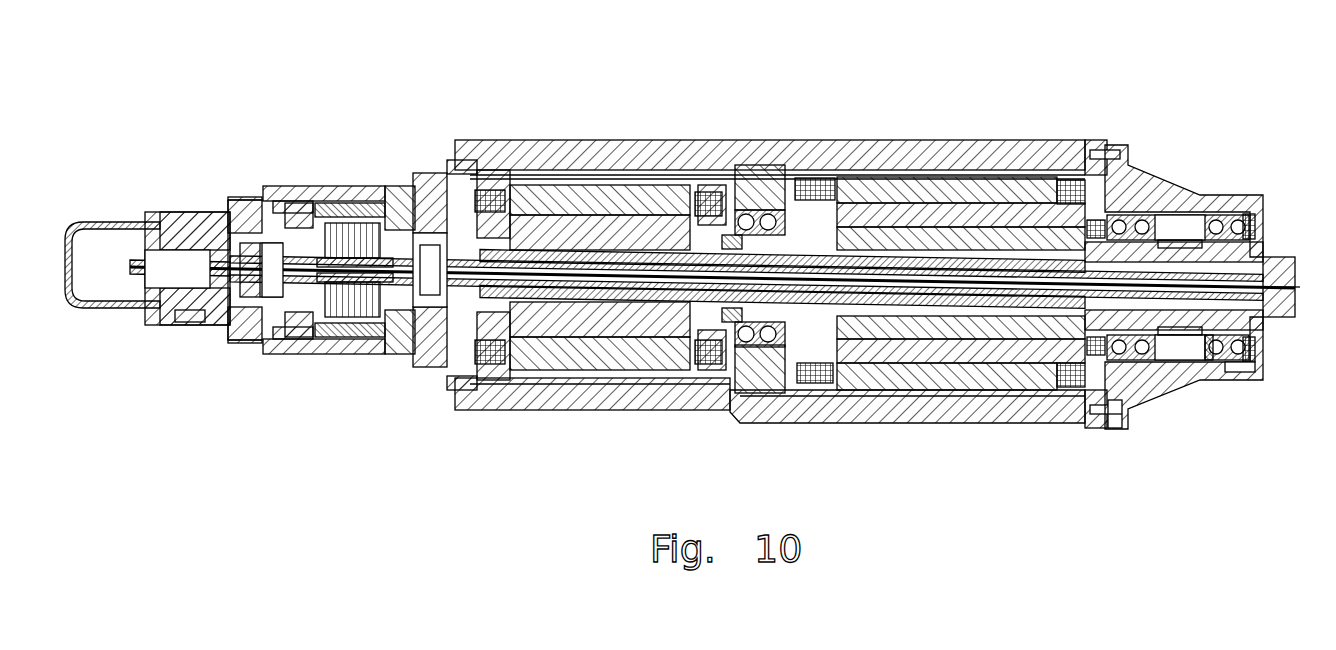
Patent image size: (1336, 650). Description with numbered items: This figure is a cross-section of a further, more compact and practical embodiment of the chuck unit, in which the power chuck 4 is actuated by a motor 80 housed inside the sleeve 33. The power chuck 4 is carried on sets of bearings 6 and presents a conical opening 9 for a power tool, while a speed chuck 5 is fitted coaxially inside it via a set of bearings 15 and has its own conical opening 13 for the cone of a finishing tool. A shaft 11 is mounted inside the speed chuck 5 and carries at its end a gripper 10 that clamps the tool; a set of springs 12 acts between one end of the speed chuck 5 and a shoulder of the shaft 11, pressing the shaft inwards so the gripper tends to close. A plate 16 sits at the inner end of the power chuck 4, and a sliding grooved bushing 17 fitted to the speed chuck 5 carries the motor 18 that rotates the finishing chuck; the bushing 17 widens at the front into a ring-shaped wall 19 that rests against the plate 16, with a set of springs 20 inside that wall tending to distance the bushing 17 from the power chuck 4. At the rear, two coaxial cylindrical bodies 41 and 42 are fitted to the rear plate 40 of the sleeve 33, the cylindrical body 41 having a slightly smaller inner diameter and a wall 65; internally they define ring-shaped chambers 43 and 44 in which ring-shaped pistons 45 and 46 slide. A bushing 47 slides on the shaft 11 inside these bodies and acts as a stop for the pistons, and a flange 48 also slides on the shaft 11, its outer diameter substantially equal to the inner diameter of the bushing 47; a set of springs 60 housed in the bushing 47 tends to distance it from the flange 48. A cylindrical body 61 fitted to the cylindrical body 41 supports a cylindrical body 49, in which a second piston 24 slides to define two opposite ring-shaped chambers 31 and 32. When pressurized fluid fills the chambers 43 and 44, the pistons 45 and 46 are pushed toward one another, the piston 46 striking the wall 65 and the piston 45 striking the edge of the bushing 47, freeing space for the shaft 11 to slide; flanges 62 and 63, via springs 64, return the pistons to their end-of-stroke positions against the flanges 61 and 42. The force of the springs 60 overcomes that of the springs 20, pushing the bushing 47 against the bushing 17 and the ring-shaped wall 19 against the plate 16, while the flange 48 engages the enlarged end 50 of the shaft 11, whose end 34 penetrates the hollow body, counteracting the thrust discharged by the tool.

The power chuck 4 is at (1198, 365).
The speed chuck 5 is at (1175, 362).
The bearings 6 is at (1132, 215).
The conical opening 9 is at (1267, 260).
The gripper 10 is at (1243, 205).
The shaft 11 is at (1003, 300).
The set of springs 12 is at (1113, 400).
The conical opening 13 is at (1265, 372).
The bearings 15 is at (1053, 350).
The plate 16 is at (772, 178).
The sliding grooved bushing 17 is at (740, 222).
The motor 18 is at (570, 190).
The ring-shaped wall 19 is at (746, 200).
The set of springs 20 is at (713, 195).
The second piston 24 is at (155, 240).
The ring-shaped chamber 31 is at (210, 210).
The ring-shaped chamber 32 is at (180, 322).
The sleeve 33 is at (1082, 160).
The end of shaft 34 is at (1177, 198).
The rear plate 40 is at (465, 162).
The cylindrical body 41 is at (342, 187).
The cylindrical body 42 is at (432, 173).
The ring-shaped chamber 43 is at (275, 350).
The ring-shaped chamber 44 is at (412, 362).
The ring-shaped piston 45 is at (298, 187).
The ring-shaped piston 46 is at (402, 233).
The bushing 47 is at (411, 367).
The flange 48 is at (294, 350).
The cylindrical body 49 is at (185, 215).
The enlarged end of shaft 50 is at (220, 330).
The set of springs 60 is at (350, 340).
The cylindrical body 61 is at (258, 203).
The flange 62 is at (313, 340).
The flange 63 is at (385, 345).
The springs 64 is at (343, 340).
The wall 65 is at (392, 203).
The motor 80 is at (990, 180).